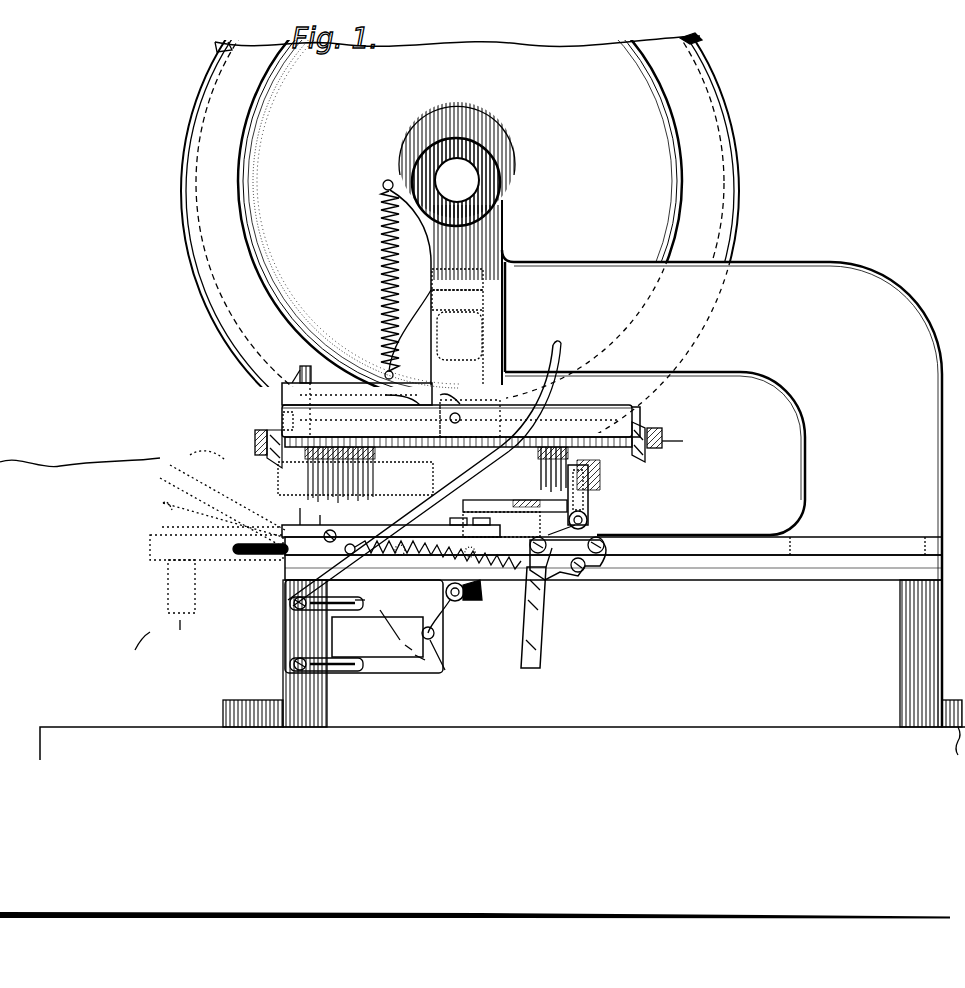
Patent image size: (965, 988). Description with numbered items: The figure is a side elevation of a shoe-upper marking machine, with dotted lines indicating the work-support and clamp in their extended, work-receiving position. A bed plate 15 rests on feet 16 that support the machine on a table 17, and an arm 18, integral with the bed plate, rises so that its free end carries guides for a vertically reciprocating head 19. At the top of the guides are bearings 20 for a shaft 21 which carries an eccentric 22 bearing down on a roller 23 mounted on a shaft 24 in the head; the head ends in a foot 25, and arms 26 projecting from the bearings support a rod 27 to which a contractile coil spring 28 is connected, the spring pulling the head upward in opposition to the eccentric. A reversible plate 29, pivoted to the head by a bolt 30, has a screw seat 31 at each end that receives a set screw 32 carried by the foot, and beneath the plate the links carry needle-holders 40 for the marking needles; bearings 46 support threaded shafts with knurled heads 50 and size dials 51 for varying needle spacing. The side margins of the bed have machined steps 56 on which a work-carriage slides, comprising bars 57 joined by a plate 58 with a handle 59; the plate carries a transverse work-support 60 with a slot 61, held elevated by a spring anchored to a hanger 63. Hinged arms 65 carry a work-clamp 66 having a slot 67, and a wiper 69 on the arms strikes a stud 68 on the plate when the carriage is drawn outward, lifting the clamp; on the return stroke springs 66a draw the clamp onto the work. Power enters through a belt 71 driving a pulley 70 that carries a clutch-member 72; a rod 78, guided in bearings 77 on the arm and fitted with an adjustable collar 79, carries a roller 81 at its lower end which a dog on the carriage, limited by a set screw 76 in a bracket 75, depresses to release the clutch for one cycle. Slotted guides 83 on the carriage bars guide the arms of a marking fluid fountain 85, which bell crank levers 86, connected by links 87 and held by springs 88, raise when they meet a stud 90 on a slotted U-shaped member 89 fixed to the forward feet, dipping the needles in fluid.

The bed plate 15 is at (753, 570).
The feet 16 is at (293, 640).
The table 17 is at (680, 727).
The arm 18 is at (722, 488).
The head 19 is at (430, 272).
The bearing 20 is at (500, 170).
The shaft 21 is at (457, 180).
The eccentric 22 is at (420, 147).
The roller 23 is at (478, 228).
The shaft 24 is at (470, 243).
The foot 25 is at (320, 393).
The arms 26 is at (382, 192).
The rod 27 is at (382, 184).
The contractile coil spring 28 is at (378, 330).
The reversible plate 29 is at (457, 418).
The bolt 30 is at (452, 395).
The screw seat 31 is at (292, 418).
The set screw 32 is at (296, 372).
The needle-holder 40 is at (300, 462).
The bearing 46 is at (270, 452).
The knurled head 50 is at (253, 437).
The dial 51 is at (275, 452).
The machined steps 56 is at (694, 564).
The bars 57 is at (715, 548).
The plate 58 is at (300, 543).
The handle 59 is at (287, 560).
The work-support 60 is at (190, 513).
The slot 61 is at (170, 508).
The hanger 63 is at (190, 613).
The arm 65 is at (285, 598).
The work-clamp 66 is at (278, 530).
The springs 66a is at (293, 553).
The slot 67 is at (470, 603).
The stud 68 is at (449, 418).
The wiper 69 is at (566, 354).
The pulley 70 is at (238, 318).
The belt 71 is at (703, 38).
The clutch-member 72 is at (540, 483).
The bracket 75 is at (428, 640).
The set screw 76 is at (390, 615).
The bearings 77 is at (470, 676).
The rod 78 is at (678, 472).
The adjustable collar 79 is at (355, 479).
The roller 81 is at (450, 640).
The vertically slotted guides 83 is at (592, 506).
The marking fluid fountain 85 is at (395, 590).
The bell crank levers 86 is at (545, 665).
The links 87 is at (590, 565).
The springs 88 is at (535, 600).
The slotted U-shaped member 89 is at (440, 655).
The stud 90 is at (435, 650).